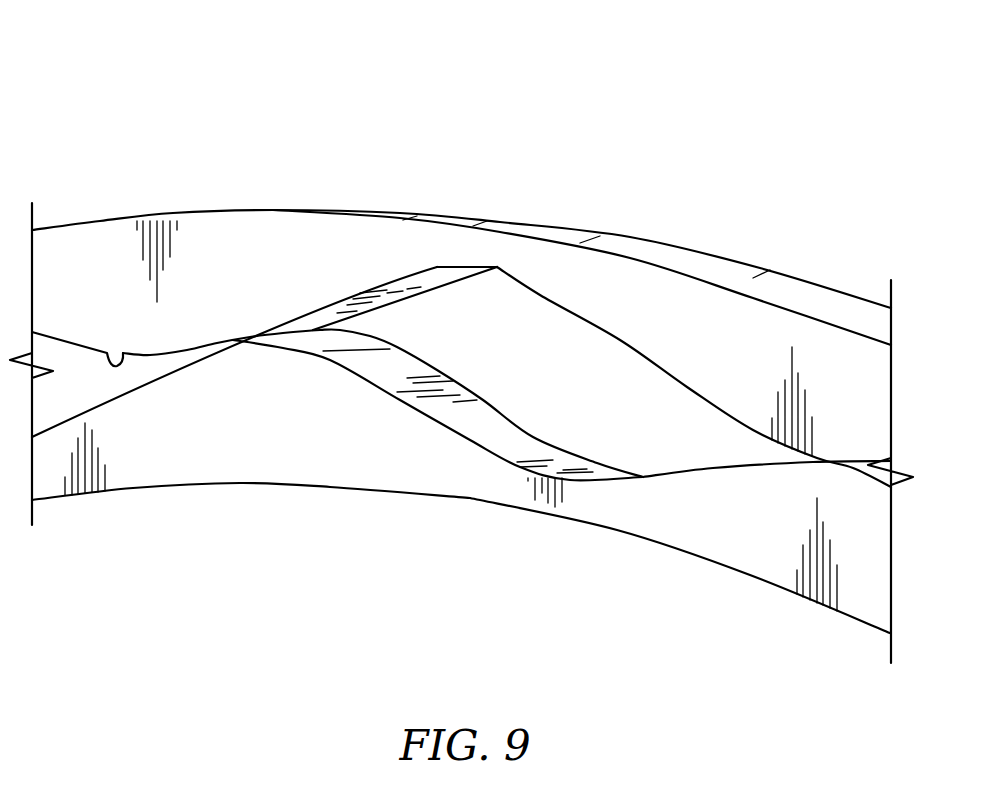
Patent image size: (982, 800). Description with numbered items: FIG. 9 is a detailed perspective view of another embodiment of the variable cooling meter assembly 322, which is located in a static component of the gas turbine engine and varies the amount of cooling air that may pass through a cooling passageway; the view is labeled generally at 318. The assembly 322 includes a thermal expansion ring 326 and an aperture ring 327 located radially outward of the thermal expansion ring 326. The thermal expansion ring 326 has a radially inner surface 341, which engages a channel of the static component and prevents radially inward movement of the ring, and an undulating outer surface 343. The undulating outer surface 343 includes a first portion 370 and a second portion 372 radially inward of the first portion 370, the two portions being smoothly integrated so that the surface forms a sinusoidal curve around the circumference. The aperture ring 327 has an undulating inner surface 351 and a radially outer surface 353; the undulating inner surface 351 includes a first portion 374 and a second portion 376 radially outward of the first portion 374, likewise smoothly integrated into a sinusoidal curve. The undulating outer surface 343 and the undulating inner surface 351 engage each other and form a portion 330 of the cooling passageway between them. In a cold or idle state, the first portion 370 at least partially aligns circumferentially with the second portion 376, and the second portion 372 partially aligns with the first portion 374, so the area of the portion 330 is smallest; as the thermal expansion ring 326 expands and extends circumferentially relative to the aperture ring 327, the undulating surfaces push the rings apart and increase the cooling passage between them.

The turbine component assembly 318 is at (605, 90).
The variable cooling meter assembly 322 is at (650, 128).
The thermal expansion ring 326 is at (752, 558).
The aperture ring 327 is at (722, 327).
The portion of the cooling passageway 330 is at (553, 332).
The radially inner surface 341 is at (135, 490).
The undulating outer surface 343 is at (558, 462).
The undulating inner surface 351 is at (388, 293).
The radially outer surface 353 is at (633, 247).
The first portion 370 is at (322, 343).
The second portion 372 is at (557, 460).
The first portion 374 is at (123, 353).
The second portion 376 is at (458, 270).